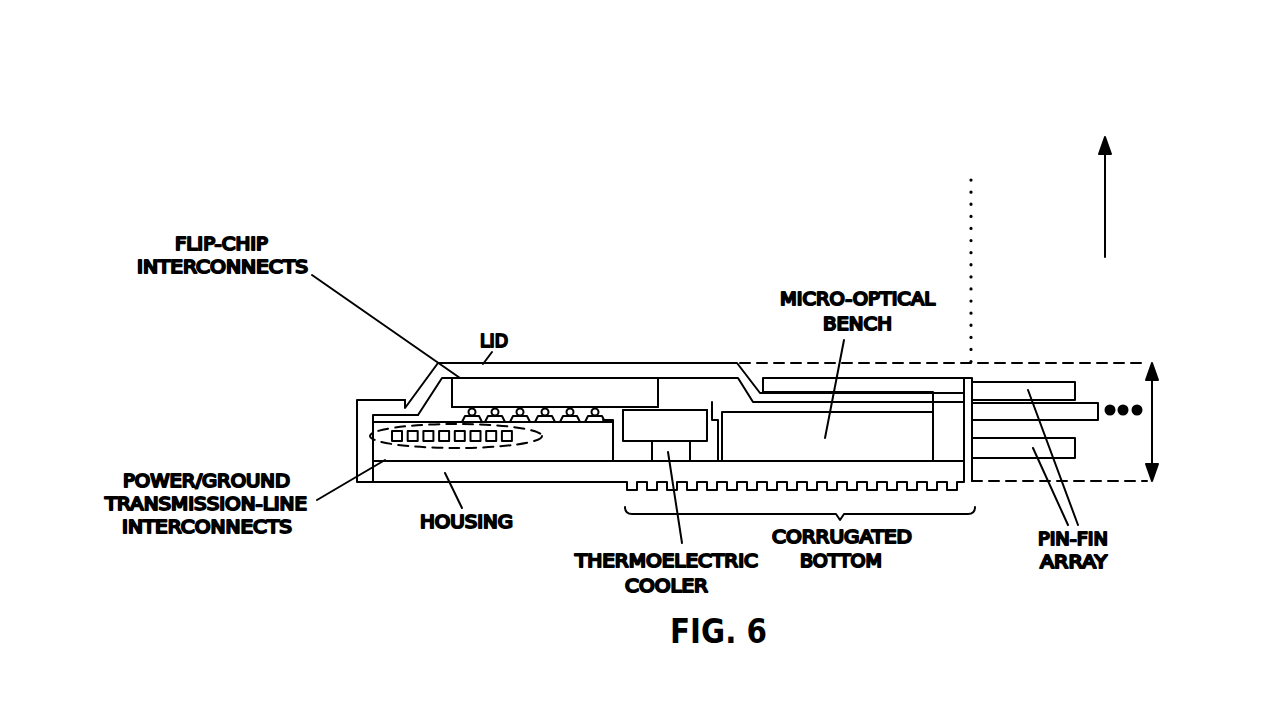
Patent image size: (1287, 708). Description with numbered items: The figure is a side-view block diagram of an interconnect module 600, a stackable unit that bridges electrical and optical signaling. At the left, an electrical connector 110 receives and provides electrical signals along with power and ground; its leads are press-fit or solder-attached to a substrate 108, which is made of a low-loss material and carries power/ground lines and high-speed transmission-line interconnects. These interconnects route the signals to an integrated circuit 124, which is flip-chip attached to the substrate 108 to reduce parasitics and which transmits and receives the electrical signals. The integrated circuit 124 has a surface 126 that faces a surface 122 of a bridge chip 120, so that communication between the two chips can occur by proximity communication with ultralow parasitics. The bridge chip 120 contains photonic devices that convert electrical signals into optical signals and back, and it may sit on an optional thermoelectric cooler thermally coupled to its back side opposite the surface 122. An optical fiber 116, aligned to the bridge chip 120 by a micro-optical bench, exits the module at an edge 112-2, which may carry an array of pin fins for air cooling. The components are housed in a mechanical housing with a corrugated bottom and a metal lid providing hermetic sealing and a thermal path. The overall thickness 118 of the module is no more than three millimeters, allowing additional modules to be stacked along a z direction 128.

The interconnect module 600 is at (237, 112).
The integrated circuit 124 is at (522, 395).
The surface 126 is at (617, 407).
The bridge chip 120 is at (667, 425).
The surface 122 is at (700, 408).
The edge 112-2 is at (970, 253).
The z direction 128 is at (1107, 207).
The optical fiber 116 is at (878, 405).
The thickness 118 is at (1152, 427).
The electrical connector 110 is at (385, 438).
The substrate 108 is at (433, 450).